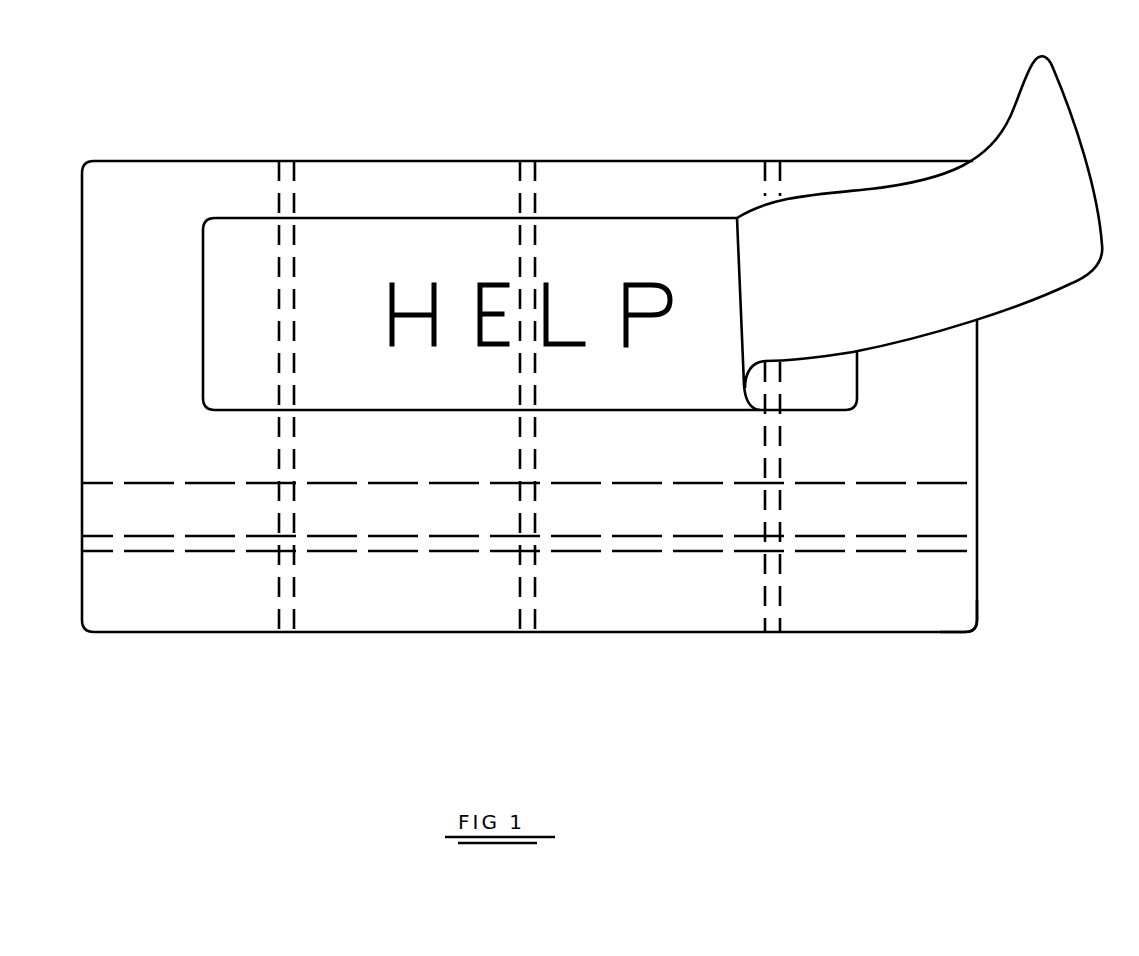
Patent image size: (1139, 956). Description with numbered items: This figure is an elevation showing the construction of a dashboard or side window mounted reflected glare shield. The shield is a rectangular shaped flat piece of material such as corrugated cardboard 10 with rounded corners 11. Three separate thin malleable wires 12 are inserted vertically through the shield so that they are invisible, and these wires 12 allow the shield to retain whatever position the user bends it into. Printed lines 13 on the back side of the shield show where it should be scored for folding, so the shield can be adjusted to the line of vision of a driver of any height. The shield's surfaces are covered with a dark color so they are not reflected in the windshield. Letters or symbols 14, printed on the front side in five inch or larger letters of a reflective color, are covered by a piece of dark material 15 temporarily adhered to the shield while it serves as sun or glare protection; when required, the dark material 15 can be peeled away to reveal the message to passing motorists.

The corrugated cardboard 10 is at (146, 218).
The rounded corners 11 is at (983, 630).
The thin malleable wires 12 is at (517, 160).
The printed lines 13 is at (983, 548).
The letters or symbols 14 is at (627, 265).
The dark material 15 is at (1013, 313).